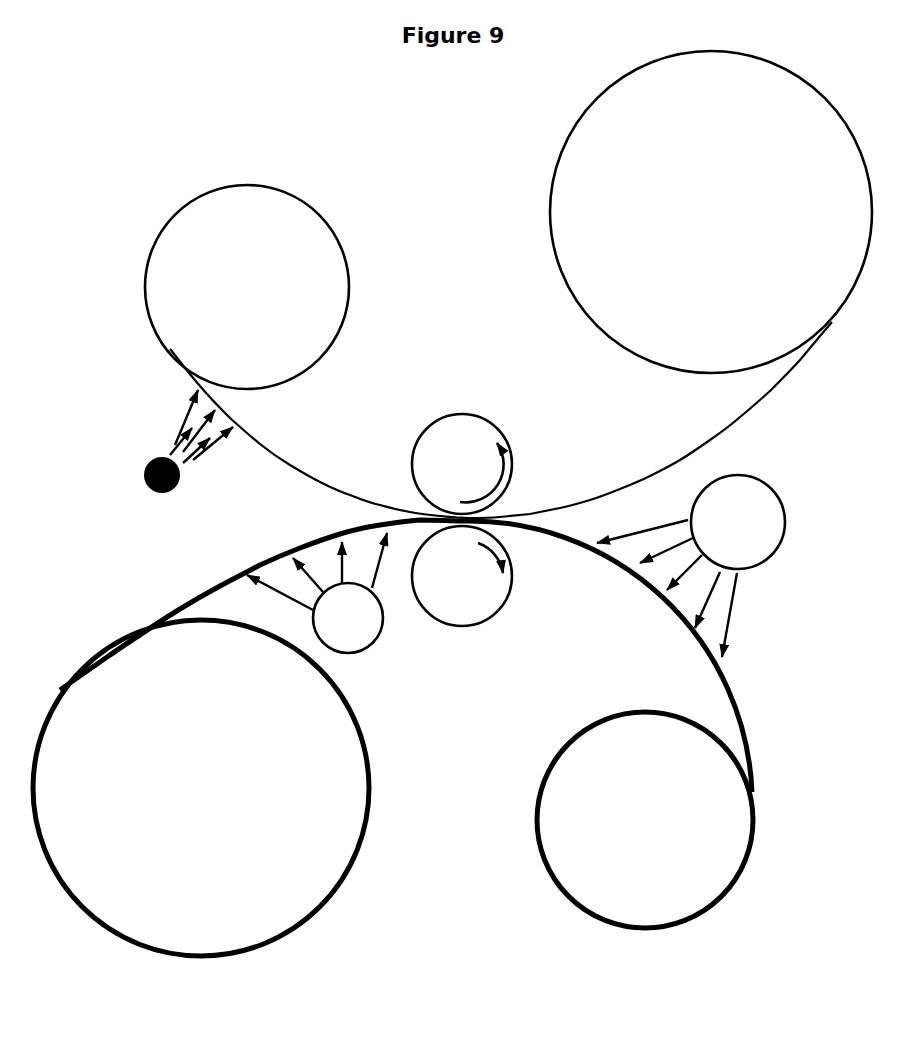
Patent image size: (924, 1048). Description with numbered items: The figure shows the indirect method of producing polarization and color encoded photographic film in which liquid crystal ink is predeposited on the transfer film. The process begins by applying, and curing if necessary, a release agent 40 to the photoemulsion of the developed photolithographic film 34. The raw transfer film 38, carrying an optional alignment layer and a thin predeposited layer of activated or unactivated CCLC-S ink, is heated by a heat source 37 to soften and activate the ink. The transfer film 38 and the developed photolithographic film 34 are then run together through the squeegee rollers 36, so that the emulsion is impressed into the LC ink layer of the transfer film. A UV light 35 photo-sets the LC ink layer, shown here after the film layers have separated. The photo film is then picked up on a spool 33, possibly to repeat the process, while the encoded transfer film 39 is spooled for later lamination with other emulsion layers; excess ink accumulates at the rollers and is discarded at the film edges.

The spool 33 is at (711, 212).
The developed photolithographic film 34 is at (308, 507).
The UV light 35 is at (691, 566).
The squeegee rollers 36 is at (513, 483).
The heat source 37 is at (317, 593).
The transfer film 38 is at (288, 545).
The encoded transfer film 39 is at (645, 820).
The release agent 40 is at (178, 426).